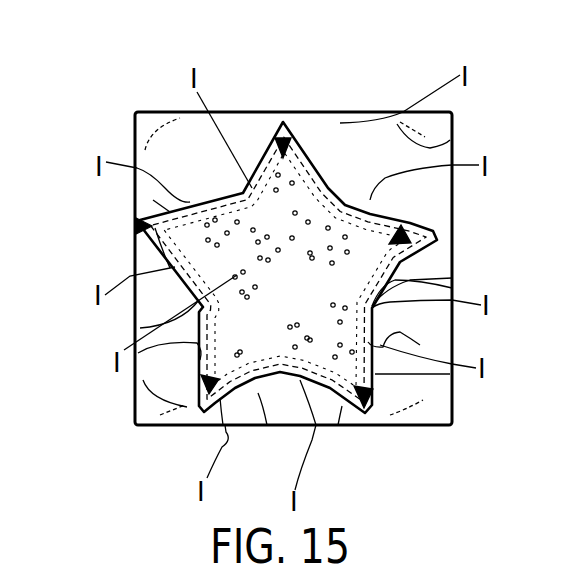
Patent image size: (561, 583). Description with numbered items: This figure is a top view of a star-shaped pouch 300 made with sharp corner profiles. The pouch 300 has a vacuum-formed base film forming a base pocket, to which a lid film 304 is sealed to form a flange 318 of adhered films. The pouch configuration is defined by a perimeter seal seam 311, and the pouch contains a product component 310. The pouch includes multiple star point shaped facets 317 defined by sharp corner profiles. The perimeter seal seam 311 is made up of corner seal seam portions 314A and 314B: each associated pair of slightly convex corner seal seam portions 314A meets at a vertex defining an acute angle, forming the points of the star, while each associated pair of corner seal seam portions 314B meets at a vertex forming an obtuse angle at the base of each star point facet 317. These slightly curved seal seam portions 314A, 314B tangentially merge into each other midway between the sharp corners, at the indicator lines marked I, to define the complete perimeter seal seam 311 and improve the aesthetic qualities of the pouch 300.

The star-shaped pouch 300 is at (118, 312).
The lid film 304 is at (452, 288).
The product component 310 is at (186, 328).
The perimeter seal seam 311 is at (138, 353).
The corner seal seam portion 314A is at (258, 158).
The corner seal seam portion 314B is at (214, 200).
The star point shaped facet 317 is at (284, 138).
The flange 318 is at (204, 388).